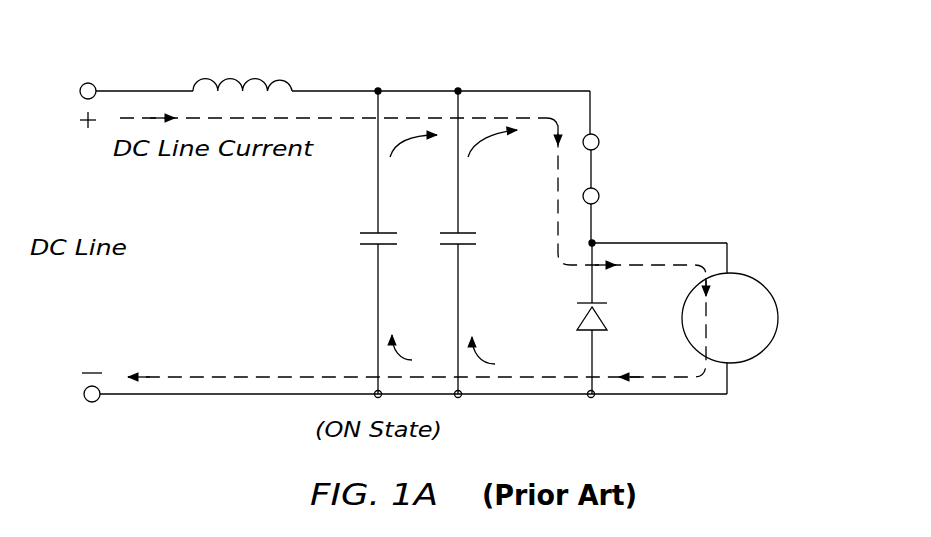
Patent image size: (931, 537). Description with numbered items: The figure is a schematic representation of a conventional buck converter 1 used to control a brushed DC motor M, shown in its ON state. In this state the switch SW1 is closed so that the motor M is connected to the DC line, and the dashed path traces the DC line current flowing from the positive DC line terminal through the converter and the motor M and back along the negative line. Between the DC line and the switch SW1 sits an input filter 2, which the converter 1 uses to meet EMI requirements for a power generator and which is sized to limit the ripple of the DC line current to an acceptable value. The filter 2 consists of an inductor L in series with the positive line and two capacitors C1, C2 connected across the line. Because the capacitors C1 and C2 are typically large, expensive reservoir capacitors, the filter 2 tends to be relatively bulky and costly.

The buck converter 1 is at (145, 82).
The input filter 2 is at (391, 60).
The inductor L is at (256, 79).
The capacitor C1 is at (357, 243).
The capacitor C2 is at (479, 243).
The switch SW1 is at (595, 174).
The brushed DC motor M is at (767, 288).